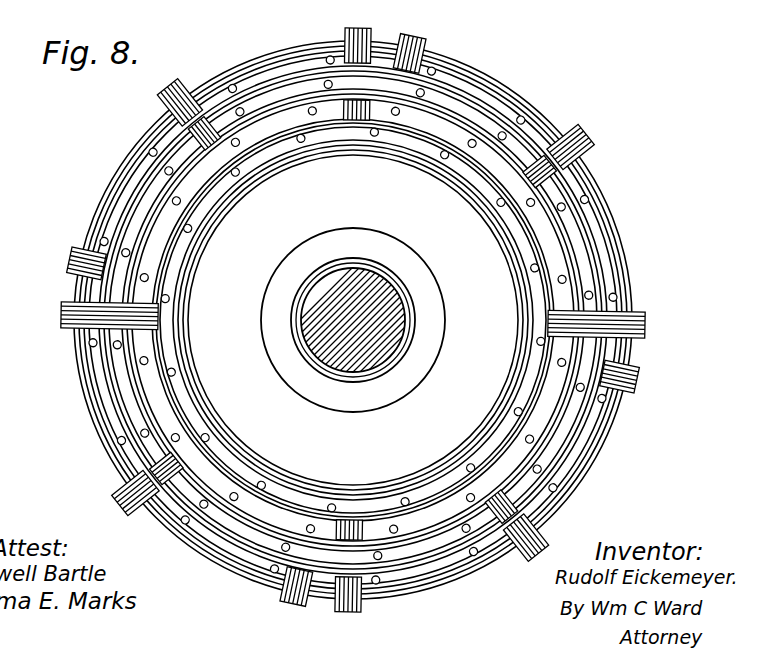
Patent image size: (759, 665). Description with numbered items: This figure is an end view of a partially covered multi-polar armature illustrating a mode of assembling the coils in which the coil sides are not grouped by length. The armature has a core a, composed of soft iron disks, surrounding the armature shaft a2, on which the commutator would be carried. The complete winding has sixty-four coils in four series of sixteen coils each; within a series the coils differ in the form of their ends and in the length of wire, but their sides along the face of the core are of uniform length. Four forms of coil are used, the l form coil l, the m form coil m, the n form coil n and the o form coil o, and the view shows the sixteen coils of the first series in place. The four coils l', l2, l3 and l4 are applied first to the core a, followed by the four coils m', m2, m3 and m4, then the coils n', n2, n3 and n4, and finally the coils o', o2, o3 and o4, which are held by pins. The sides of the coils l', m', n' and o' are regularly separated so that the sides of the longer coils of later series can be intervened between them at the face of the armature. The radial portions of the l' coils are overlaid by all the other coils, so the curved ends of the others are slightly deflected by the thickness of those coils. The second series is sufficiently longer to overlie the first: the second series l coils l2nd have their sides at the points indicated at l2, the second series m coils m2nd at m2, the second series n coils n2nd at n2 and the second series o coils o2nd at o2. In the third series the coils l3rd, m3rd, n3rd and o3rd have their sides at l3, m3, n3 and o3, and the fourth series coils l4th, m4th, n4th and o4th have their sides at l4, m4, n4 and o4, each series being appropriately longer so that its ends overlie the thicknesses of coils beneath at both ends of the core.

The armature core a is at (353, 303).
The armature shaft a2 is at (380, 320).
The l form coil l is at (352, 318).
The m form coil m is at (353, 318).
The n form coil n is at (353, 318).
The o form coil o is at (352, 318).
The first series l coil l' is at (283, 178).
The first series m coil m' is at (390, 160).
The first series n coil n' is at (506, 250).
The first series o coil o' is at (472, 199).
The coil l2 is at (423, 163).
The coil m2 is at (540, 455).
The coil n2 is at (440, 517).
The coil o2 is at (580, 422).
The coil l3 is at (491, 387).
The coil m3 is at (297, 513).
The coil n3 is at (143, 400).
The coil o3 is at (180, 493).
The coil l4 is at (289, 464).
The coil m4 is at (195, 200).
The coil n4 is at (190, 163).
The coil o4 is at (133, 240).
The second series l coil l2nd is at (353, 319).
The second series m coil m2nd is at (353, 318).
The second series n coil n2nd is at (354, 318).
The second series o coil o2nd is at (353, 318).
The third series l coil l3rd is at (353, 319).
The third series m coil m3rd is at (353, 318).
The third series n coil n3rd is at (354, 319).
The third series o coil o3rd is at (353, 318).
The fourth series l coil l4th is at (353, 319).
The fourth series m coil m4th is at (352, 318).
The fourth series n coil n4th is at (353, 319).
The fourth series o coil o4th is at (353, 318).